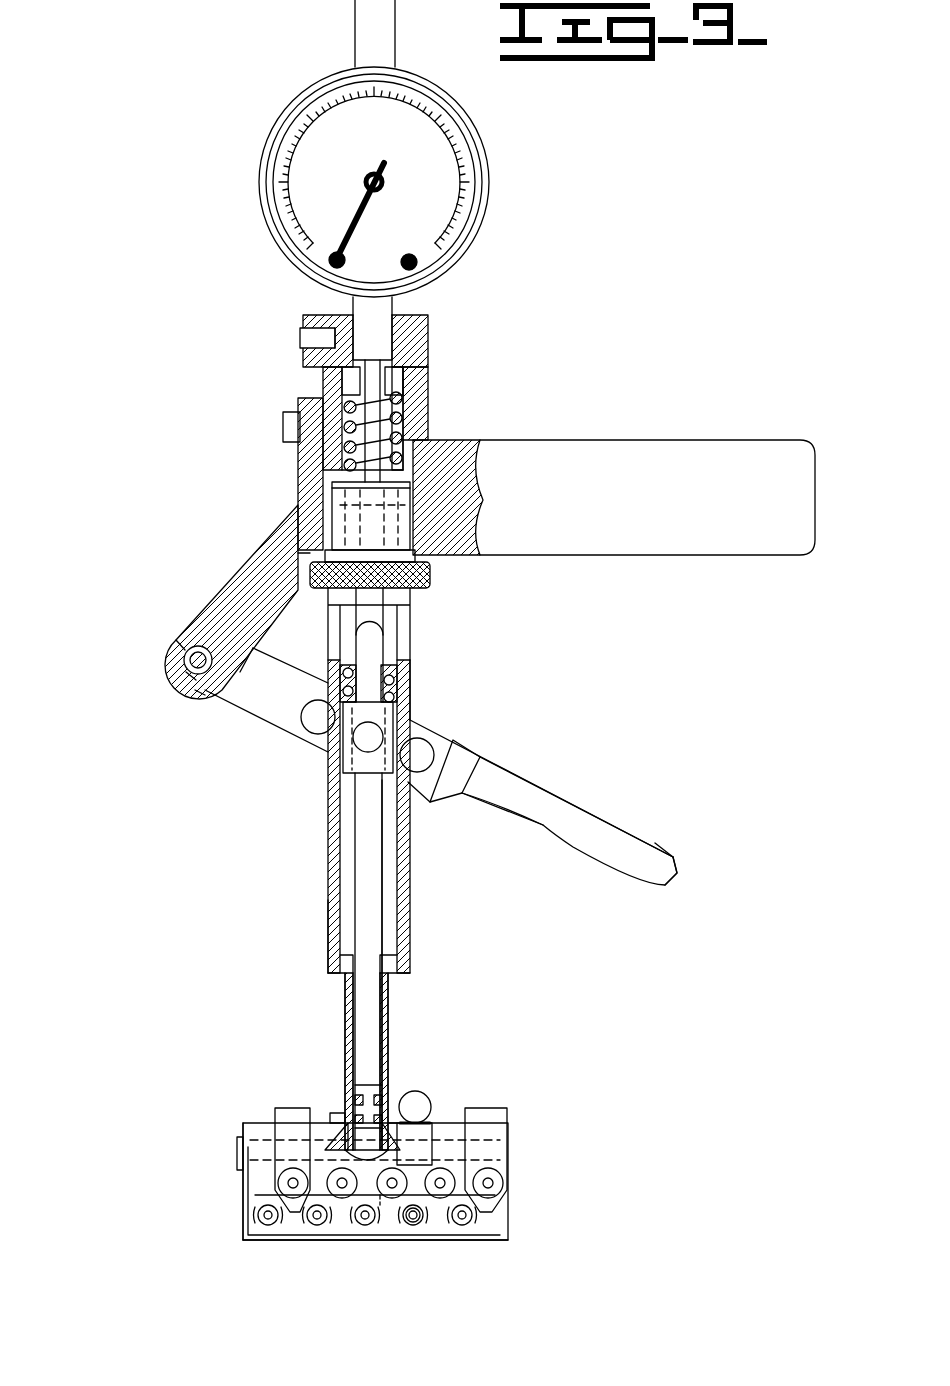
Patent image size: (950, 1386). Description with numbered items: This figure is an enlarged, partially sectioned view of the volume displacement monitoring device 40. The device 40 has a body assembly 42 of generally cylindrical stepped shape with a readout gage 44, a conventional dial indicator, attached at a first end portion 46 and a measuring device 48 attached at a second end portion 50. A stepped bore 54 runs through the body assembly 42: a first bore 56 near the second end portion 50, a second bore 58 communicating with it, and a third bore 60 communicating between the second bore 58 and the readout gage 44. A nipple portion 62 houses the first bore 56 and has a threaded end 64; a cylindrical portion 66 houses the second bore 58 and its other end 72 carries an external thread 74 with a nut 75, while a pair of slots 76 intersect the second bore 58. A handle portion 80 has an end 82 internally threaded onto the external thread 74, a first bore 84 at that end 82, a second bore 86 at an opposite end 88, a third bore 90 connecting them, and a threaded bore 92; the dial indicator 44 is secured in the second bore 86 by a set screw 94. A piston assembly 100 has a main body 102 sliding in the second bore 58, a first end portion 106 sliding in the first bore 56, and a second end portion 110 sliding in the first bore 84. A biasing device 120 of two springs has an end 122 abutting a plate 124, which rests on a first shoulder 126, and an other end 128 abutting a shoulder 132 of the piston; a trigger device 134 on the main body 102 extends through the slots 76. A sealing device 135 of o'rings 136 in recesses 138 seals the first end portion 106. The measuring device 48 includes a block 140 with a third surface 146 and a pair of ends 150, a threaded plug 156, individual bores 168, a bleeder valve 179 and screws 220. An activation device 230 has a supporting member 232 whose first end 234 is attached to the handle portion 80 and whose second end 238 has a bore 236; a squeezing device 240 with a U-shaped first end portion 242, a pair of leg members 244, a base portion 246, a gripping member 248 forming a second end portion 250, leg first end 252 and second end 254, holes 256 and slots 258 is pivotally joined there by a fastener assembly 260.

The volume displacement monitoring device 40 is at (672, 651).
The body assembly 42 is at (262, 938).
The readout gage 44 is at (288, 105).
The first end portion 46 is at (405, 303).
The measuring device 48 is at (488, 1253).
The second end portion 50 is at (410, 1060).
The stepped bore 54 is at (340, 935).
The first bore 56 is at (356, 1040).
The second bore 58 is at (360, 890).
The third bore 60 is at (290, 425).
The nipple portion 62 is at (345, 985).
The threaded end 64 is at (338, 1120).
The cylindrical portion 66 is at (330, 858).
The other end 72 is at (305, 470).
The external thread 74 is at (300, 520).
The nut 75 is at (420, 592).
The pair of slots 76 is at (395, 622).
The handle portion 80 is at (690, 440).
The end 82 is at (430, 572).
The first bore 84 is at (470, 533).
The second bore 86 is at (415, 348).
The opposite end 88 is at (425, 320).
The third bore 90 is at (335, 343).
The threaded bore 92 is at (430, 462).
The set screw 94 is at (300, 338).
The piston assembly 100 is at (385, 905).
The main body 102 is at (400, 700).
The first end portion 106 is at (383, 1000).
The second end portion 110 is at (410, 505).
The biasing device 120 is at (398, 432).
The end 122 is at (400, 375).
The plate 124 is at (345, 380).
The first shoulder 126 is at (395, 403).
The other end 128 is at (327, 787).
The shoulder 132 is at (330, 685).
The trigger device 134 is at (262, 718).
The sealing device 135 is at (350, 1100).
The o'rings 136 is at (352, 1115).
The recesses 138 is at (395, 1020).
The block 140 is at (330, 1242).
The third surface 146 is at (450, 1123).
The pair of ends 150 is at (243, 1200).
The threaded plug 156 is at (240, 1150).
The individual bore 168 is at (392, 1200).
The bleeder valve 179 is at (428, 1095).
The screws 220 is at (435, 1222).
The activation device 230 is at (162, 842).
The supporting member 232 is at (220, 608).
The first end 234 is at (310, 400).
The bore 236 is at (185, 645).
The second end 238 is at (195, 690).
The squeezing device 240 is at (570, 845).
The first end portion 242 is at (250, 690).
The pair of leg members 244 is at (293, 752).
The base portion 246 is at (585, 790).
The gripping member 248 is at (655, 843).
The second end portion 250 is at (677, 875).
The first end 252 is at (425, 800).
The second end 254 is at (205, 628).
The hole 256 is at (190, 672).
The slot 258 is at (455, 735).
The fastener assembly 260 is at (197, 660).